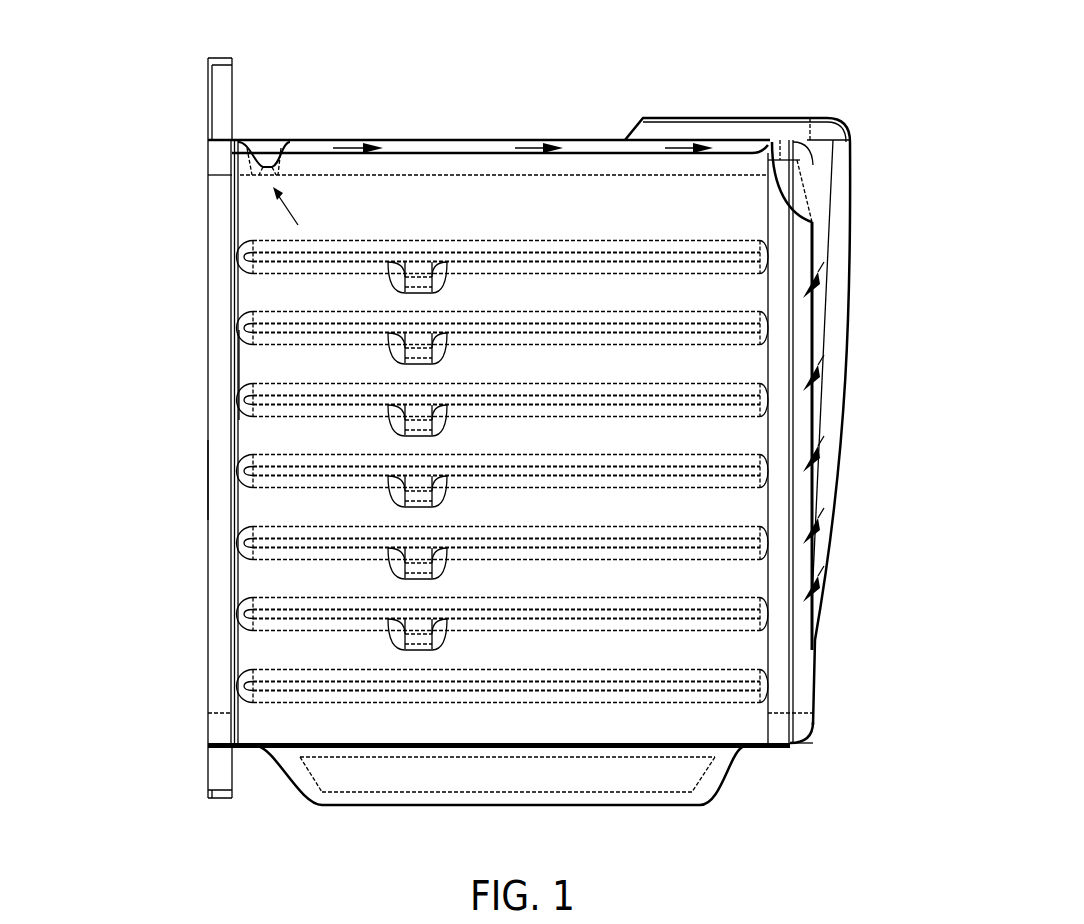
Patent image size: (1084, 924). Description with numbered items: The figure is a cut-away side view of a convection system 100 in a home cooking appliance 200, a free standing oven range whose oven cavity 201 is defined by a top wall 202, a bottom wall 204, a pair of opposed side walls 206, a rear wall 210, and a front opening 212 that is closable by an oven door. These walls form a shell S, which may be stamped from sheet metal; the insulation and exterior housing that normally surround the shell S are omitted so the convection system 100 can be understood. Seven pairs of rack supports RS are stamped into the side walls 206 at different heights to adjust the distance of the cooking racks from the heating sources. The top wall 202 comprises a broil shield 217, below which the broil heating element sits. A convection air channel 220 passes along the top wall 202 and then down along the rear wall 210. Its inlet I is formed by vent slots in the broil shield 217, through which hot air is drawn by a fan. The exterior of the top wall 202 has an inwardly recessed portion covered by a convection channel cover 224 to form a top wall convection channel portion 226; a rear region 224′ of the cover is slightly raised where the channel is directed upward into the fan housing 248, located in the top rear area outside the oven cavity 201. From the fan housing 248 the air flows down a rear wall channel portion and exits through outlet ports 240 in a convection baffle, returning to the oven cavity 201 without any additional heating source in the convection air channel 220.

The convection system 100 is at (262, 120).
The home cooking appliance 200 is at (131, 522).
The oven cavity 201 is at (248, 370).
The top wall 202 is at (407, 153).
The bottom wall 204 is at (760, 748).
The side wall 206 is at (340, 650).
The rear wall 210 is at (845, 440).
The front opening 212 is at (208, 473).
The broil shield 217 is at (218, 160).
The convection air channel 220 is at (843, 313).
The convection channel cover 224 is at (273, 140).
The raised region of convection channel cover 224′ is at (683, 117).
The top wall convection channel portion 226 is at (438, 150).
The outlet ports 240 is at (817, 387).
The fan housing 248 is at (805, 163).
The rack supports RS is at (237, 325).
The shell S is at (815, 672).
The inlet I is at (263, 173).